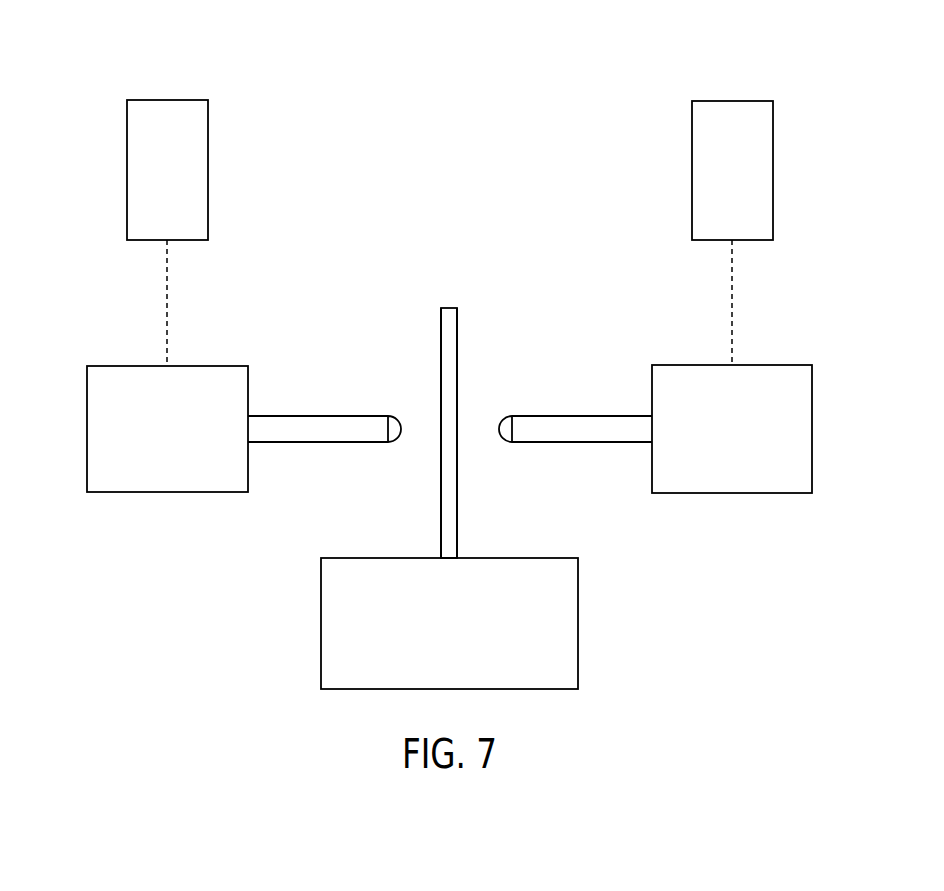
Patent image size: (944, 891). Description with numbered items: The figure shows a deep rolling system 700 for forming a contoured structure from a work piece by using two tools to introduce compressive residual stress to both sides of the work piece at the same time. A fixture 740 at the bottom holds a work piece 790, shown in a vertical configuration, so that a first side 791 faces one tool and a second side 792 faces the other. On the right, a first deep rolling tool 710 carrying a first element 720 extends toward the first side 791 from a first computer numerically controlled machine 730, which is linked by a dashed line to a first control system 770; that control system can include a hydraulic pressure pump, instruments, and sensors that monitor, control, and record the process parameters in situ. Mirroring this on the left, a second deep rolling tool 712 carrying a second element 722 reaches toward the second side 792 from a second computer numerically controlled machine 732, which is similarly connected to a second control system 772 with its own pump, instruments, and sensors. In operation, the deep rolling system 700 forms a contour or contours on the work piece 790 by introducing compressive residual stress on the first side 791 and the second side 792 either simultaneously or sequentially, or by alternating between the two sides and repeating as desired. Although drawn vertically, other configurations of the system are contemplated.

The deep rolling system 700 is at (126, 72).
The first deep rolling tool 710 is at (575, 415).
The second deep rolling tool 712 is at (322, 415).
The first element 720 is at (506, 432).
The second element 722 is at (394, 432).
The first computer numerically controlled (CNC) machine 730 is at (812, 432).
The second computer numerically controlled (CNC) machine 732 is at (87, 430).
The fixture 740 is at (578, 626).
The first control system 770 is at (773, 176).
The second control system 772 is at (127, 170).
The work piece 790 is at (447, 306).
The first side 791 is at (458, 335).
The second side 792 is at (440, 357).